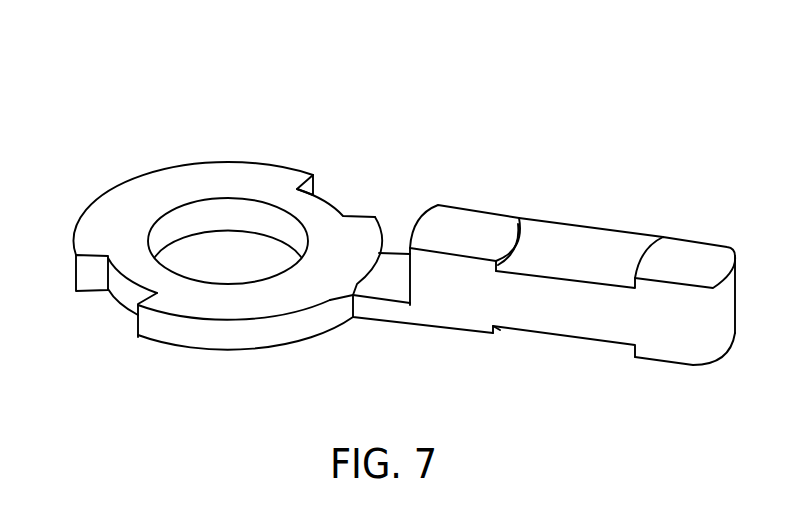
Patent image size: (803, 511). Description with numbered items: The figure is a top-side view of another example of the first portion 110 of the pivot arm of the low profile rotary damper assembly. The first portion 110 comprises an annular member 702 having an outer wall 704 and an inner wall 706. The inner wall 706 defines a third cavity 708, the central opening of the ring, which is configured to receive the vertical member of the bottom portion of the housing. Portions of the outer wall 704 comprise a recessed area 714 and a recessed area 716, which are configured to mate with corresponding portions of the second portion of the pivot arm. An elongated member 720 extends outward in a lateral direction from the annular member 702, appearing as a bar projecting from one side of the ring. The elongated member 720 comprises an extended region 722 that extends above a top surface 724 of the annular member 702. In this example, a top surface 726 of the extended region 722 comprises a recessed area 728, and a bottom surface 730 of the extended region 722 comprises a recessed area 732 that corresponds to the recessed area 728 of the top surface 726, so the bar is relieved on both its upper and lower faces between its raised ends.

The first portion 110 is at (388, 240).
The annular member 702 is at (236, 340).
The outer wall 704 is at (307, 331).
The inner wall 706 is at (262, 220).
The third cavity 708 is at (209, 255).
The recessed area 714 is at (110, 308).
The recessed area 716 is at (337, 203).
The elongated member 720 is at (407, 325).
The extended region 722 is at (478, 210).
The top surface 724 is at (268, 188).
The top surface 726 is at (690, 264).
The recessed area 728 is at (578, 258).
The bottom surface 730 is at (665, 369).
The recessed area 732 is at (534, 335).